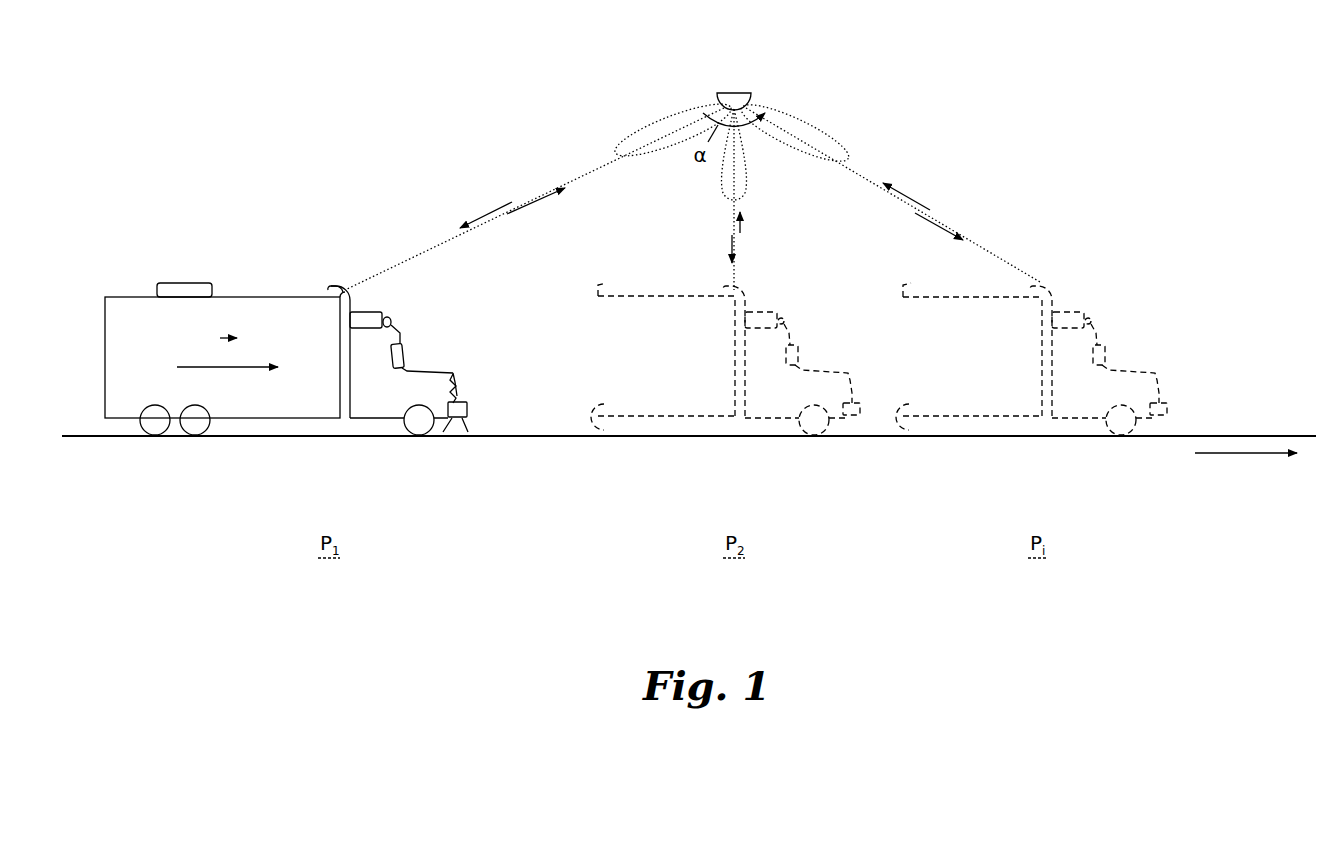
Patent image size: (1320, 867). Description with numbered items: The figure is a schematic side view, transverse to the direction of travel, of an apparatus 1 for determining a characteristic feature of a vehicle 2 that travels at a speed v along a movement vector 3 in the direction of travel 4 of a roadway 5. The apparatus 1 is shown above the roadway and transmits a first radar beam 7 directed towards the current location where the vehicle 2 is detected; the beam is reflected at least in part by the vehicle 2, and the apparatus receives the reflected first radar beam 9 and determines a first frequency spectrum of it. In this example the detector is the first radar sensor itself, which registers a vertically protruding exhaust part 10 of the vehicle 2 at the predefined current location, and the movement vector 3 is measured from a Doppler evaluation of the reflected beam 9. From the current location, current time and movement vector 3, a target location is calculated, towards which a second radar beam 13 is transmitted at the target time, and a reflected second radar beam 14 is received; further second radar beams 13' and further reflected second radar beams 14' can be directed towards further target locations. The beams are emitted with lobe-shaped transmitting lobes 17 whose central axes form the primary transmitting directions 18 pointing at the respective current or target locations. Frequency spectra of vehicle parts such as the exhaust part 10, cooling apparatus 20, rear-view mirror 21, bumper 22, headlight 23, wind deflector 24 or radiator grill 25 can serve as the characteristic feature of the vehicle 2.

The apparatus 1 is at (732, 100).
The vehicle 2 is at (945, 400).
The movement vector 3 is at (243, 370).
The direction of travel 4 is at (1247, 458).
The roadway 5 is at (1237, 432).
The first radar beam 7 is at (500, 207).
The first reflected radar beam 9 is at (532, 206).
The exhaust part 10 is at (330, 283).
The second radar beam 13 is at (693, 248).
The second reflected radar beam 14 is at (779, 225).
The further second radar beam 13' is at (919, 235).
The further reflected second radar beam 14' is at (921, 179).
The transmitting lobe 17 is at (667, 118).
The primary transmitting direction 18 is at (603, 155).
The cooling apparatus 20 is at (193, 290).
The rear-view mirror 21 is at (404, 354).
The bumper 22 is at (463, 418).
The headlight 23 is at (391, 321).
The wind deflector 24 is at (456, 372).
The radiator grill 25 is at (459, 388).